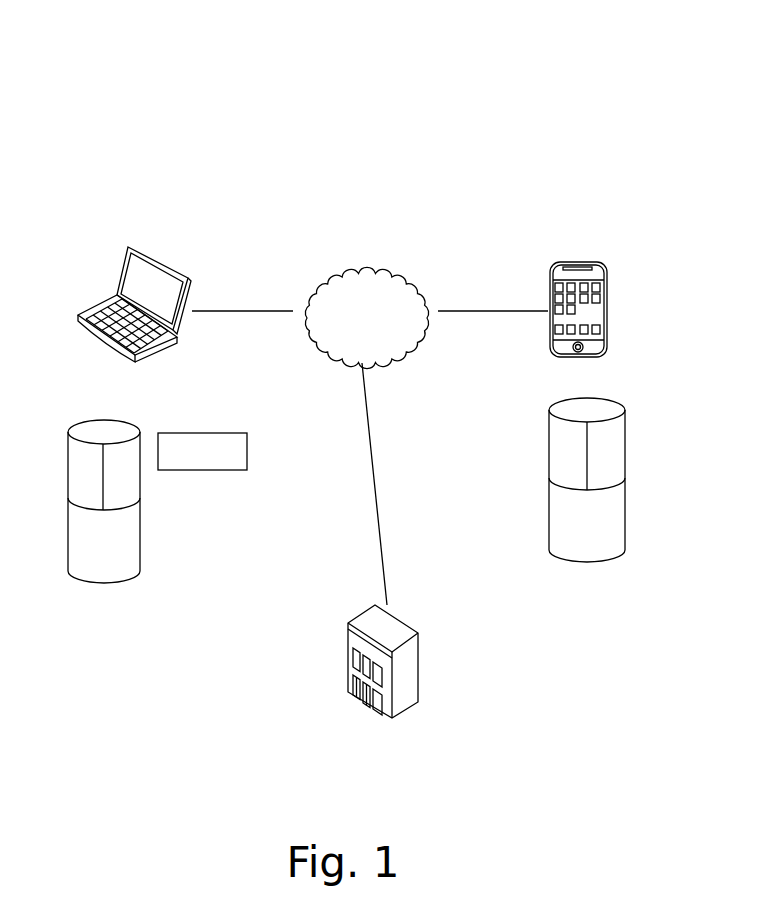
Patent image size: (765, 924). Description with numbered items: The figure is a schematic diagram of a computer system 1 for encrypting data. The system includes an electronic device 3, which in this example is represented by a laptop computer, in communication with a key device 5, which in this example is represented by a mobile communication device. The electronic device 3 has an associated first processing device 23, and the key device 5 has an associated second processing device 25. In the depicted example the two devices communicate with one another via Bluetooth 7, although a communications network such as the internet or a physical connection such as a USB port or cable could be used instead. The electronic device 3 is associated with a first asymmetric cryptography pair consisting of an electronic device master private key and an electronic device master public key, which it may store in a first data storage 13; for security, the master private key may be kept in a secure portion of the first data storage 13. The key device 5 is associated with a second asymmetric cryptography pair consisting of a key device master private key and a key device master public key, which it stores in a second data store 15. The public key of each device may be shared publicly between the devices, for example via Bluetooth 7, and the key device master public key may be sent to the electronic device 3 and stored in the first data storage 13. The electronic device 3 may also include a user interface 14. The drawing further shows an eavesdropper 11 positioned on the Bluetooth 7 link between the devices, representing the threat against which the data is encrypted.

The computer system 1 is at (180, 90).
The electronic device 3 is at (160, 260).
The key device 5 is at (578, 260).
The Bluetooth 7 is at (397, 292).
The eavesdropper 11 is at (392, 633).
The first data storage 13 is at (102, 565).
The user interface 14 is at (202, 457).
The second data store 15 is at (588, 542).
The first processing device 23 is at (150, 352).
The second processing device 25 is at (607, 340).